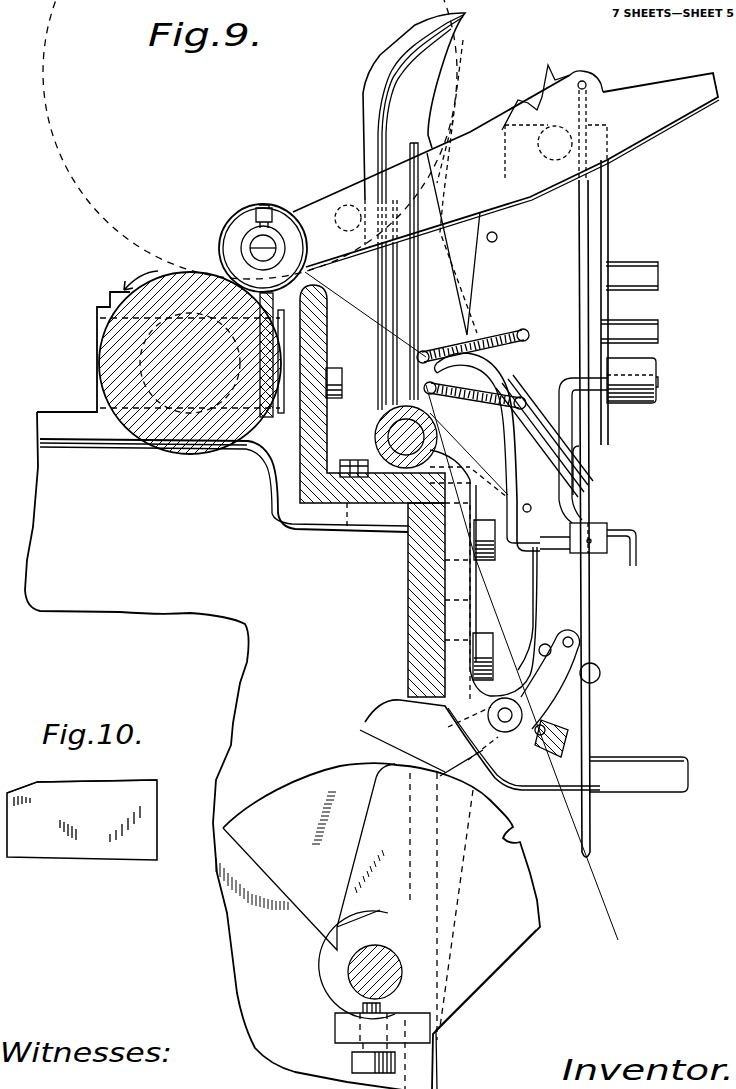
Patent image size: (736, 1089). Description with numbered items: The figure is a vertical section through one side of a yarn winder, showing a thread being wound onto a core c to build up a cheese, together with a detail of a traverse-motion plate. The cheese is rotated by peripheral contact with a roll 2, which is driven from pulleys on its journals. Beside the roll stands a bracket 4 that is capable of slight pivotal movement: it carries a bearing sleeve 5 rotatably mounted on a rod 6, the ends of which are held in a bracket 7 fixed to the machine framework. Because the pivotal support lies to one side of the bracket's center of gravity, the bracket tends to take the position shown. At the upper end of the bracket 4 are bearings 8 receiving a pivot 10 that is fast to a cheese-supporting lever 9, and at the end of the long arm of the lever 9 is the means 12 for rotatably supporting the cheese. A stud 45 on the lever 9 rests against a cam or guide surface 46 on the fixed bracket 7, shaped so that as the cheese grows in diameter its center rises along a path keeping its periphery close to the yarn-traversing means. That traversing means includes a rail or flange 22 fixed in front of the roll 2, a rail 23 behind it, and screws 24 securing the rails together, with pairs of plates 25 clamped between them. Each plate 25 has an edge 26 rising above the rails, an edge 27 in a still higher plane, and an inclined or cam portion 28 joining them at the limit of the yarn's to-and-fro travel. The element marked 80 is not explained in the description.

In FIG. 9, the core c is at (226, 222).
In FIG. 9, the cheese-supporting means 12 is at (246, 218).
In FIG. 9, the cheese-supporting lever 9 is at (318, 200).
In FIG. 9, the stud 45 is at (345, 205).
In FIG. 9, the cam or guide surface 46 is at (362, 130).
In FIG. 9, the bearings 8 is at (497, 190).
In FIG. 9, the pivot 10 is at (587, 124).
In FIG. 9, the bracket 4 is at (608, 232).
In FIG. 9, the roll 2 is at (118, 340).
In FIG. 9, the rail 23 is at (263, 455).
In FIG. 9, the rail or flange 22 is at (326, 344).
In FIG. 9, the screws 24 is at (350, 381).
In FIG. 9, the spring 80 is at (425, 388).
In FIG. 9, the rod 6 is at (372, 437).
In FIG. 9, the bearing sleeve 5 is at (368, 453).
In FIG. 9, the bracket 7 is at (450, 563).
In FIG. 10, the plate 25 is at (158, 819).
In FIG. 10, the inclined or cam portion 28 is at (85, 782).
In FIG. 10, the edge 27 is at (125, 781).
In FIG. 10, the edge 26 is at (47, 784).